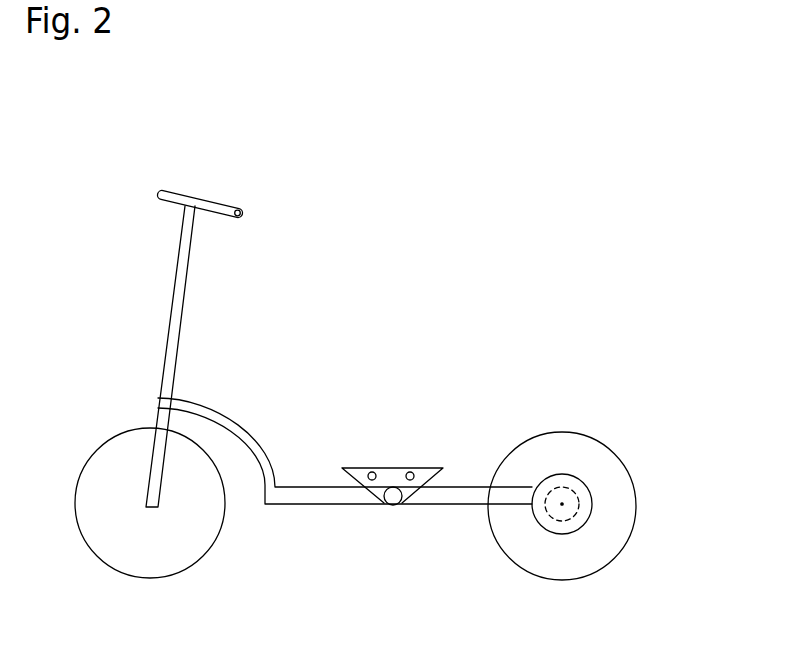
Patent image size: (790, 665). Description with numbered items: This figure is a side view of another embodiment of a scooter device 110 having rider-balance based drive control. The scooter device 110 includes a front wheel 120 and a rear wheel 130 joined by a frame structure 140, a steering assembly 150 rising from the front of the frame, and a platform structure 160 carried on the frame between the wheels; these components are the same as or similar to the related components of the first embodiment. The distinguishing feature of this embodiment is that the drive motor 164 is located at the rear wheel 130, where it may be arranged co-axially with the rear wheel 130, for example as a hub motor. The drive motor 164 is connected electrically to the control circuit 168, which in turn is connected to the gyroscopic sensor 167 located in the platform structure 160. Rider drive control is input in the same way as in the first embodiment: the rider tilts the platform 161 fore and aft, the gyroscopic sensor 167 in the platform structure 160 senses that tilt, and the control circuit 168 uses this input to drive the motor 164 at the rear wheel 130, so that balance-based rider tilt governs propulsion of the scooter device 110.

The scooter device 110 is at (490, 255).
The front wheel 120 is at (118, 575).
The rear wheel 130 is at (602, 573).
The frame structure 140 is at (271, 521).
The steering assembly 150 is at (233, 282).
The platform structure 160 is at (447, 445).
The platform 161 is at (383, 467).
The drive motor 164 is at (588, 497).
The gyroscopic sensor 167 is at (364, 477).
The control circuit 168 is at (417, 487).